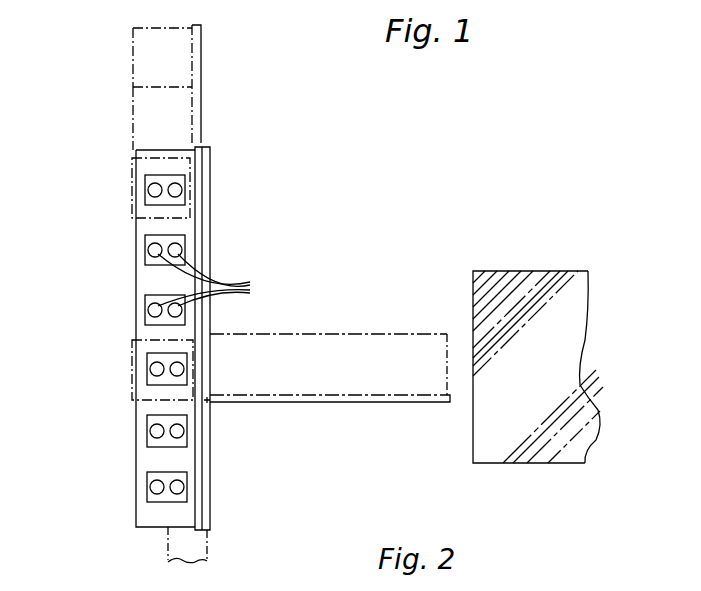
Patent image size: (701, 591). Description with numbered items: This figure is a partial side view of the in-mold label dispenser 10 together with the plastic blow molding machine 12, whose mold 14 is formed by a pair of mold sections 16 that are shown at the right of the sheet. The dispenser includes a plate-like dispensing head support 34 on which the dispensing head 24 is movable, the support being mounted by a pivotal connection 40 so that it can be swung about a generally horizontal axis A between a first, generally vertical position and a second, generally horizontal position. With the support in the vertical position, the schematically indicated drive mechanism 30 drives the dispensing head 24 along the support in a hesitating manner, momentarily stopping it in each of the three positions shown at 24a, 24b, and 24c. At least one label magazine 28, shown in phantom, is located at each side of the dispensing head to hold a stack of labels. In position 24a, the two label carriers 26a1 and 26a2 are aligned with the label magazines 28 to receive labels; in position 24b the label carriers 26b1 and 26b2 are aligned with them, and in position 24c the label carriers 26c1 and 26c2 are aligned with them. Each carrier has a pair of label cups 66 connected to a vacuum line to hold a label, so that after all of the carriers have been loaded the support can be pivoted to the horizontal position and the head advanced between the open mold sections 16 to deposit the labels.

The in-mold label dispenser 10 is at (257, 128).
The plastic blow molding machine 12 is at (538, 332).
The mold 14 is at (583, 271).
The mold sections 16 is at (508, 280).
The dispensing head 24 is at (212, 208).
The first hesitating position of dispensing head 24a is at (133, 157).
The second hesitating position of dispensing head 24b is at (155, 87).
The third hesitating position of dispensing head 24c is at (157, 28).
The label carrier 26a1 is at (145, 195).
The label carrier 26b1 is at (145, 252).
The label carrier 26c1 is at (145, 312).
The label carrier 26a2 is at (147, 370).
The label carrier 26b2 is at (147, 433).
The label carrier 26c2 is at (147, 485).
The label magazine 28 is at (132, 214).
The drive mechanism 30 is at (209, 540).
The dispensing head support 34 is at (213, 243).
The pivotal connection 40 is at (208, 406).
The label cups 66 is at (217, 280).
The horizontal axis A is at (211, 404).